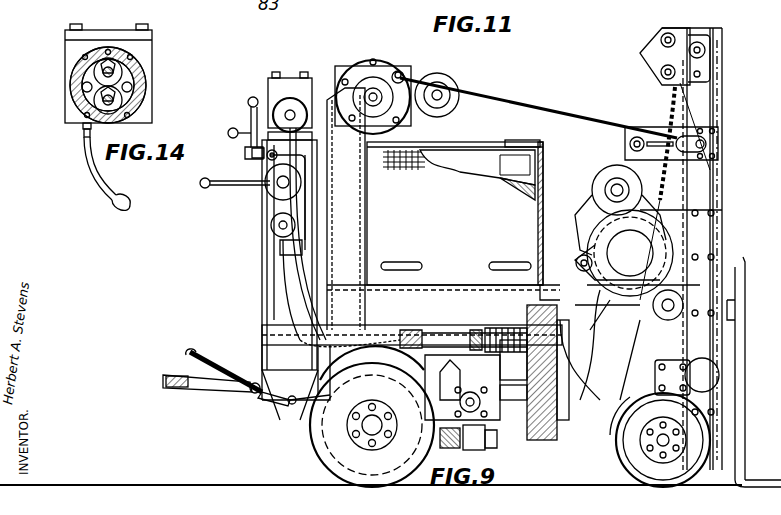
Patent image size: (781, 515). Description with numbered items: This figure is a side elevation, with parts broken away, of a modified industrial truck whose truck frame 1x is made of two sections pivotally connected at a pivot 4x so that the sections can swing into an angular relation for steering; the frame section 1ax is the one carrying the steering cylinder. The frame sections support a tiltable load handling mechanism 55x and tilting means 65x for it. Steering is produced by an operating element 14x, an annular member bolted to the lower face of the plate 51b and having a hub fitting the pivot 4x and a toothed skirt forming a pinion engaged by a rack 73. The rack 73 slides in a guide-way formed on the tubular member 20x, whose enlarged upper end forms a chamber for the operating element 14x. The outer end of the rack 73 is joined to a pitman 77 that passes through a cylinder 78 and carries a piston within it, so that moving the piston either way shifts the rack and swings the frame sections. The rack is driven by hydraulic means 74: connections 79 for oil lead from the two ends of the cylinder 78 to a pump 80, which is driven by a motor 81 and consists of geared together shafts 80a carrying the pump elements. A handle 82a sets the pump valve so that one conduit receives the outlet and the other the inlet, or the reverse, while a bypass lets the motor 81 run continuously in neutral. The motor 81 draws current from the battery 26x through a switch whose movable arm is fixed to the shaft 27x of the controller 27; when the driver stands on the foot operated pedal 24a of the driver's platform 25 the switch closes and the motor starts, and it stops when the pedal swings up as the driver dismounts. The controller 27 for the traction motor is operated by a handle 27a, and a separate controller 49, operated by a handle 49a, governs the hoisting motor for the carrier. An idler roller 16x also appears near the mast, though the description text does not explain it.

In FIG. 14, the pump 80 is at (148, 73).
In FIG. 9, the pump 80 is at (290, 82).
In FIG. 14, the geared together shafts 80a is at (80, 70).
In FIG. 14, the connections for a fluid 79 is at (116, 171).
In FIG. 9, the connections for a fluid 79 is at (285, 262).
In FIG. 9, the hydraulic means 74 is at (315, 116).
In FIG. 9, the motor 81 is at (252, 96).
In FIG. 9, the handle 49a is at (232, 117).
In FIG. 9, the handle 82a is at (252, 153).
In FIG. 9, the handle 27a is at (212, 190).
In FIG. 9, the shaft of the controller 27x is at (270, 230).
In FIG. 9, the controller 49 is at (268, 246).
In FIG. 9, the controller 27 is at (300, 184).
In FIG. 9, the tilting means 65x is at (506, 102).
In FIG. 9, the tiltable load handling mechanism 55x is at (703, 257).
In FIG. 9, the battery 26x is at (600, 170).
In FIG. 9, the idler roller 16x is at (652, 304).
In FIG. 9, the tubular member 20x is at (600, 345).
In FIG. 9, the operating element 14x is at (590, 297).
In FIG. 9, the pivot 4x is at (545, 440).
In FIG. 9, the cylinder 78 is at (412, 328).
In FIG. 9, the pitman 77 is at (445, 332).
In FIG. 9, the plate 51b is at (500, 326).
In FIG. 9, the rack 73 is at (515, 345).
In FIG. 9, the frame section 1ax is at (462, 387).
In FIG. 9, the truck frame 1x is at (478, 439).
In FIG. 9, the foot operated pedal 24a is at (222, 340).
In FIG. 9, the driver's platform 25 is at (210, 384).